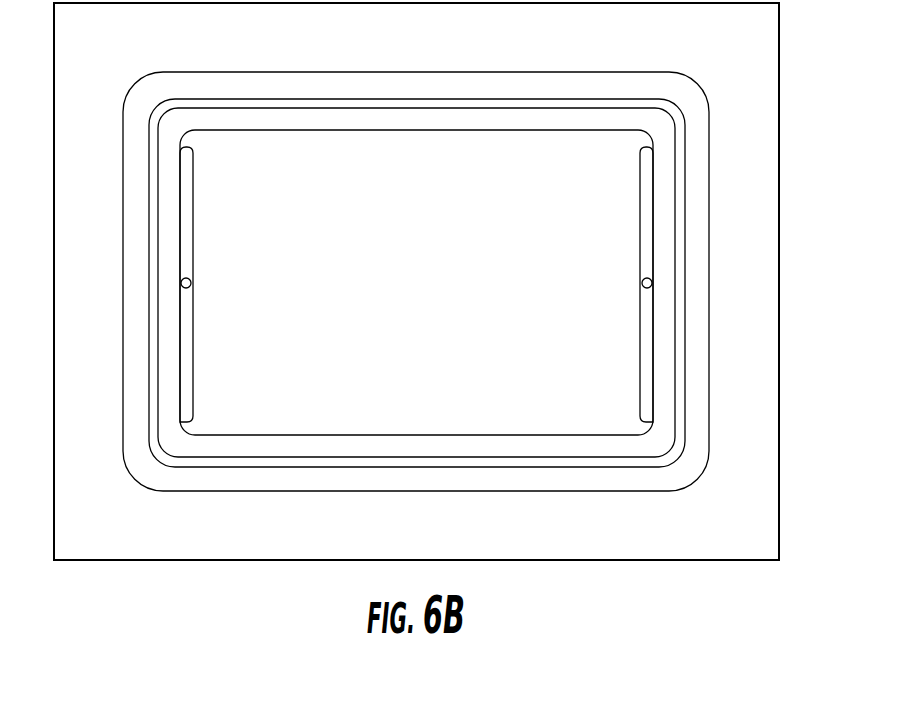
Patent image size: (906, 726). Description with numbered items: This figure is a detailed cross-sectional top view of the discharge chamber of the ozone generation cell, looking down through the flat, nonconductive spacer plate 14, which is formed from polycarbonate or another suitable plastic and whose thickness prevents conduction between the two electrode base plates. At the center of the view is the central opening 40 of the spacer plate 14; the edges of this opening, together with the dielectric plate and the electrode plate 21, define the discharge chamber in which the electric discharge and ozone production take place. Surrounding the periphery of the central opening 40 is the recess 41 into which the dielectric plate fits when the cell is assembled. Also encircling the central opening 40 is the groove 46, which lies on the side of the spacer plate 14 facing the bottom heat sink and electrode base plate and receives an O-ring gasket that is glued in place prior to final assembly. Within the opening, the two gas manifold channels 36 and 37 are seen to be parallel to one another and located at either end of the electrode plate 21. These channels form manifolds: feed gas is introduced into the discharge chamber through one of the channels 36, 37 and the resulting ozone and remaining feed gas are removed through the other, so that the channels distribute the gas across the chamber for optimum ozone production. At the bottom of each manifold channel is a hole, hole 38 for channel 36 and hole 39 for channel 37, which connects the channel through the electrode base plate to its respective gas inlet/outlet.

The spacer plate 14 is at (170, 330).
The electrode plate 21 is at (303, 417).
The gas manifold channel 36 is at (185, 190).
The gas manifold channel 37 is at (648, 190).
The hole 38 is at (191, 284).
The hole 39 is at (642, 283).
The central opening 40 is at (590, 409).
The recess 41 is at (695, 160).
The groove 46 is at (680, 348).